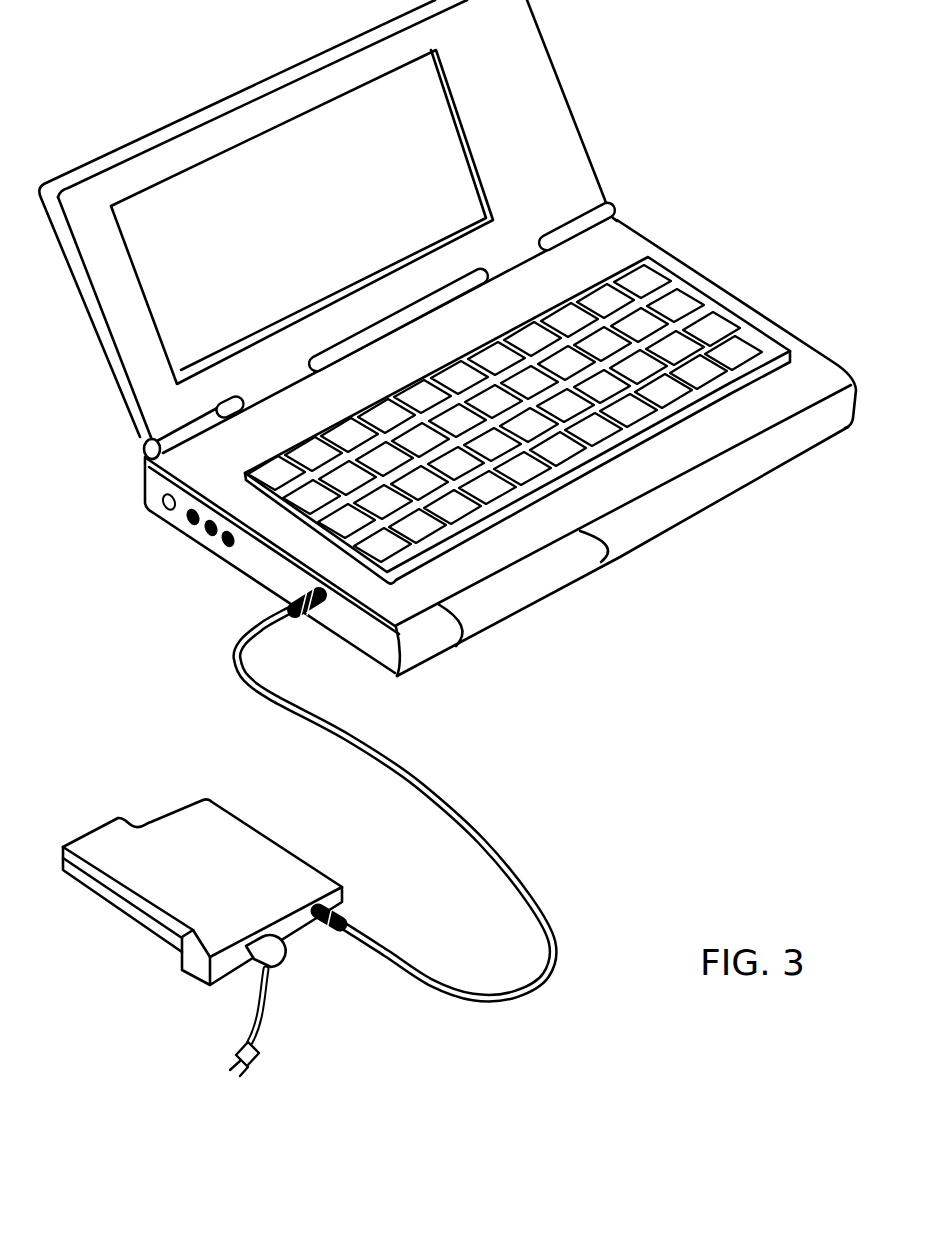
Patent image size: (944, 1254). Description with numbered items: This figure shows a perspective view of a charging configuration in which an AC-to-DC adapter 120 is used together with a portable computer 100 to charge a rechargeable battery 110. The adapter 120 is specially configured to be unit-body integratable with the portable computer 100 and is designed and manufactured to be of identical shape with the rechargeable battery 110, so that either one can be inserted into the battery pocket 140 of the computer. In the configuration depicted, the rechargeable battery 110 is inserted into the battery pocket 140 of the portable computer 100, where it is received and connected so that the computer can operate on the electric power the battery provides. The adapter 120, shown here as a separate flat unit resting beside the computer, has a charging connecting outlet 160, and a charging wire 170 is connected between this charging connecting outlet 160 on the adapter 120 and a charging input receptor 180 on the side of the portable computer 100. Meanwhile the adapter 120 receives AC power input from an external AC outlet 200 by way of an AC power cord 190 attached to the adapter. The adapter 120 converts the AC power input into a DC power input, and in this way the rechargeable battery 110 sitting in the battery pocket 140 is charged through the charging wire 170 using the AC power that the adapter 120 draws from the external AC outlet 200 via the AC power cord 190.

The portable computer 100 is at (132, 96).
The rechargeable battery 110 is at (493, 610).
The AC-to-DC adapter 120 is at (143, 855).
The battery pocket 140 is at (627, 608).
The charging connecting outlet 160 is at (340, 893).
The charging wire 170 is at (497, 843).
The charging input receptor 180 is at (292, 594).
The AC power cord 190 is at (273, 1007).
The external AC outlet 200 is at (243, 1040).